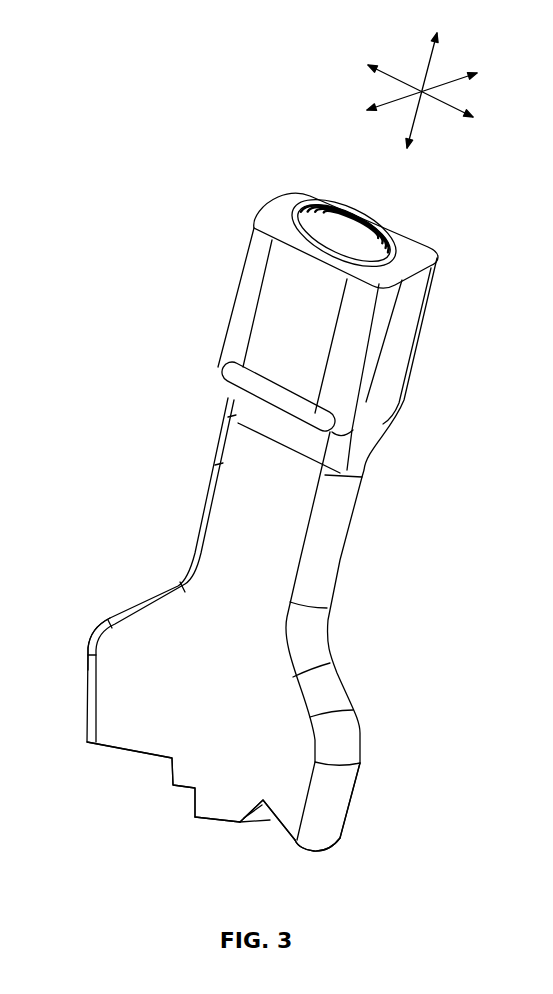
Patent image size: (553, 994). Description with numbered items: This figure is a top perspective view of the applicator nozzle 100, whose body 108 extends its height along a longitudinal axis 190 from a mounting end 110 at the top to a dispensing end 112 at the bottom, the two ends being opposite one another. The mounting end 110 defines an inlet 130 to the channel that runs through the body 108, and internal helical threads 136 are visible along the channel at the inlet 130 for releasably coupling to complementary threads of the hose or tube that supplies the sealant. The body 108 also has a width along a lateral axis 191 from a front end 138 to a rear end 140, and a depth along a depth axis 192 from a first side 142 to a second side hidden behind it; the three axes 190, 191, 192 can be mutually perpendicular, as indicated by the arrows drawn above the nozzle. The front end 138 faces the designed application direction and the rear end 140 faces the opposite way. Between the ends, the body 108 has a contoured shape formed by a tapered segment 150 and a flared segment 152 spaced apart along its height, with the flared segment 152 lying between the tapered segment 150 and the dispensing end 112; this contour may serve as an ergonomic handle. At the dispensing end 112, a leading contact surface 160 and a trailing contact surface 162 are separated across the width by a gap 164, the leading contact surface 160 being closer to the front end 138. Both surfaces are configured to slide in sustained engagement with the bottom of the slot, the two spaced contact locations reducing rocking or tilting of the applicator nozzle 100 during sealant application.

The applicator nozzle 100 is at (113, 282).
The body 108 is at (223, 467).
The mounting end 110 is at (275, 228).
The dispensing end 112 is at (150, 820).
The inlet 130 is at (340, 225).
The internal helical threads 136 is at (377, 247).
The front end 138 is at (369, 758).
The rear end 140 is at (90, 630).
The first side 142 is at (250, 547).
The tapered segment 150 is at (267, 407).
The flared segment 152 is at (320, 700).
The leading contact surface 160 is at (322, 852).
The trailing contact surface 162 is at (222, 822).
The gap 164 is at (268, 830).
The longitudinal axis 190 is at (428, 57).
The lateral axis 191 is at (455, 108).
The depth axis 192 is at (453, 77).